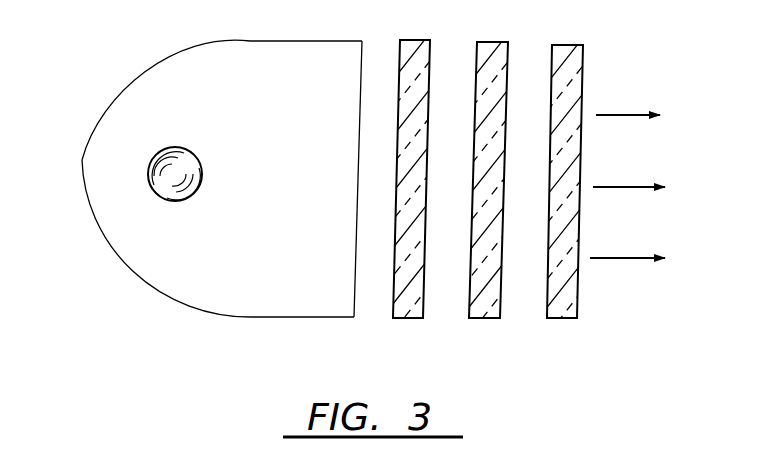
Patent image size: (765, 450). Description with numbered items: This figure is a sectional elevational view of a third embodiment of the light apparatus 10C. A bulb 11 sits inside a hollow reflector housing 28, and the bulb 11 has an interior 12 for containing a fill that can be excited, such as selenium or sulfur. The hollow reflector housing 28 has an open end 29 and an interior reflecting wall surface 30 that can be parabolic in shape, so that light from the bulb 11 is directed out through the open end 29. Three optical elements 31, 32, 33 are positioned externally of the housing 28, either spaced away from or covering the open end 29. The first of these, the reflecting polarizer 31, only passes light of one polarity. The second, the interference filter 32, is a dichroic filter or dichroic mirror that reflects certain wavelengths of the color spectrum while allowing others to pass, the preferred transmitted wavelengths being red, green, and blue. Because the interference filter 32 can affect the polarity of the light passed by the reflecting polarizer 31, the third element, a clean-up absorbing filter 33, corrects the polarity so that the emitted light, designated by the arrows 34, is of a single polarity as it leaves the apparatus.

The light apparatus 10C is at (240, 164).
The bulb 11 is at (153, 192).
The interior 12 is at (203, 169).
The hollow reflector housing 28 is at (193, 45).
The open end 29 is at (368, 166).
The interior reflecting wall surface 30 is at (160, 286).
The reflecting polarizer 31 is at (422, 42).
The interference filter 32 is at (496, 44).
The clean-up absorbing filter 33 is at (572, 46).
The arrows 34 is at (621, 117).